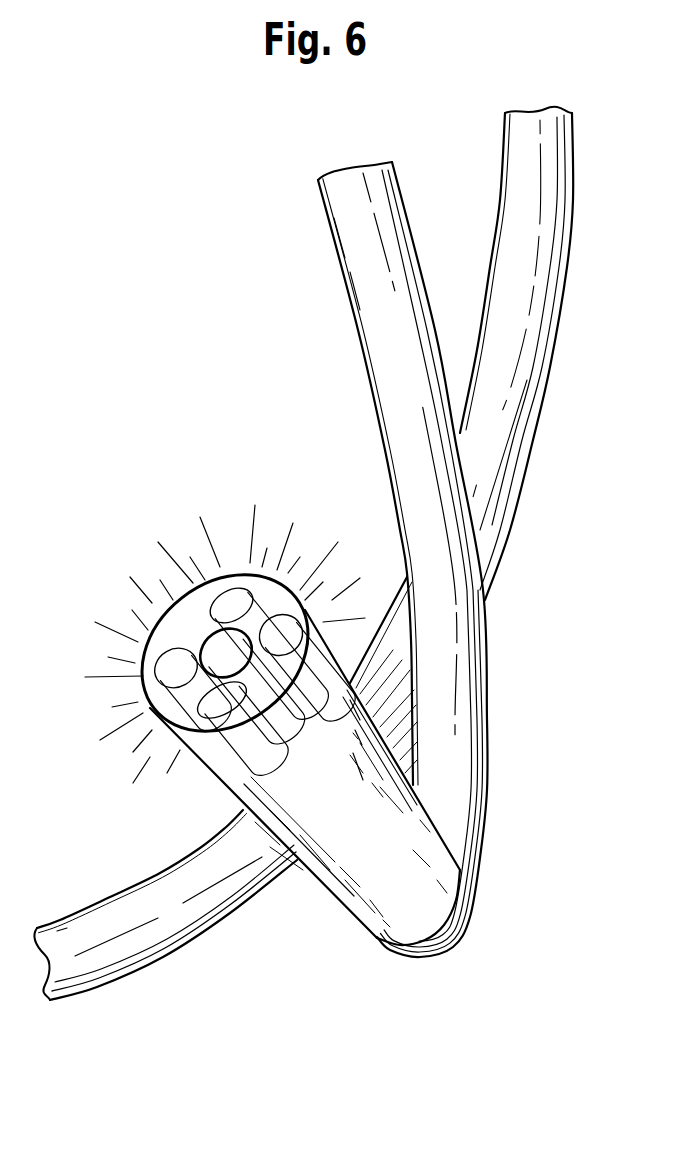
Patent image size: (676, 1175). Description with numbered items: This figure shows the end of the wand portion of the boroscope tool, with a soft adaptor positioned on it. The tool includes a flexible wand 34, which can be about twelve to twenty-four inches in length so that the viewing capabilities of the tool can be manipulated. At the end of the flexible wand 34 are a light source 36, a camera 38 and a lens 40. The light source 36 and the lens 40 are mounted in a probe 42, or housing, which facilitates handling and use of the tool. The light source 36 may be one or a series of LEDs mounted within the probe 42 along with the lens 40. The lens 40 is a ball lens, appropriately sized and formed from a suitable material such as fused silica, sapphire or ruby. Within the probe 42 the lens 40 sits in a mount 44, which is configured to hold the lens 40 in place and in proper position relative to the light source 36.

The flexible wand 34 is at (463, 675).
The light source 36 is at (226, 596).
The camera 38 is at (223, 657).
The lens 40 is at (164, 617).
The probe 42 is at (348, 923).
The mount 44 is at (277, 777).